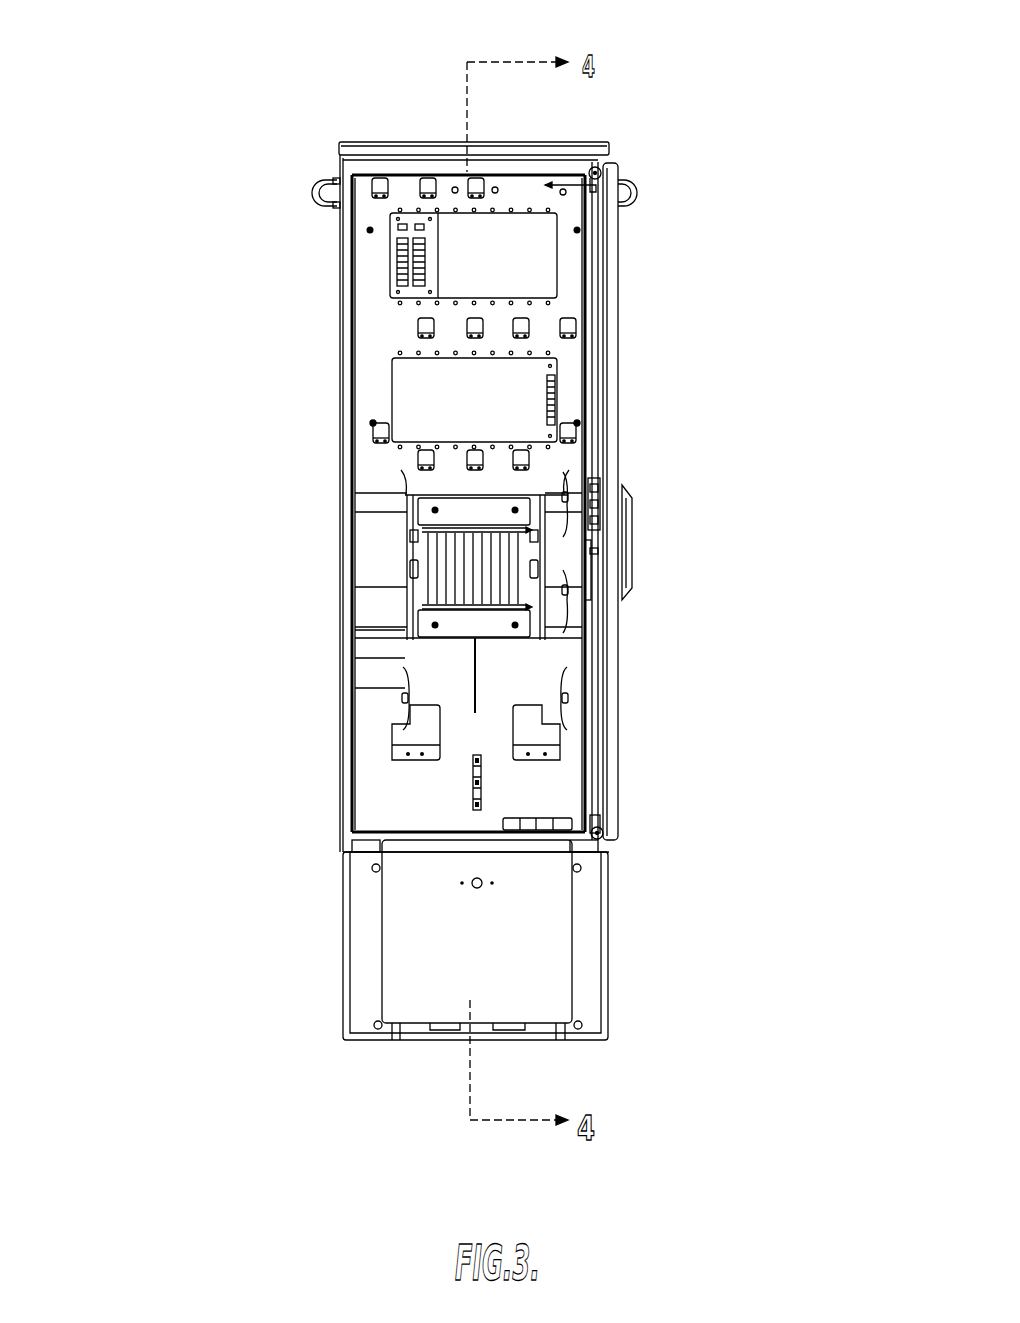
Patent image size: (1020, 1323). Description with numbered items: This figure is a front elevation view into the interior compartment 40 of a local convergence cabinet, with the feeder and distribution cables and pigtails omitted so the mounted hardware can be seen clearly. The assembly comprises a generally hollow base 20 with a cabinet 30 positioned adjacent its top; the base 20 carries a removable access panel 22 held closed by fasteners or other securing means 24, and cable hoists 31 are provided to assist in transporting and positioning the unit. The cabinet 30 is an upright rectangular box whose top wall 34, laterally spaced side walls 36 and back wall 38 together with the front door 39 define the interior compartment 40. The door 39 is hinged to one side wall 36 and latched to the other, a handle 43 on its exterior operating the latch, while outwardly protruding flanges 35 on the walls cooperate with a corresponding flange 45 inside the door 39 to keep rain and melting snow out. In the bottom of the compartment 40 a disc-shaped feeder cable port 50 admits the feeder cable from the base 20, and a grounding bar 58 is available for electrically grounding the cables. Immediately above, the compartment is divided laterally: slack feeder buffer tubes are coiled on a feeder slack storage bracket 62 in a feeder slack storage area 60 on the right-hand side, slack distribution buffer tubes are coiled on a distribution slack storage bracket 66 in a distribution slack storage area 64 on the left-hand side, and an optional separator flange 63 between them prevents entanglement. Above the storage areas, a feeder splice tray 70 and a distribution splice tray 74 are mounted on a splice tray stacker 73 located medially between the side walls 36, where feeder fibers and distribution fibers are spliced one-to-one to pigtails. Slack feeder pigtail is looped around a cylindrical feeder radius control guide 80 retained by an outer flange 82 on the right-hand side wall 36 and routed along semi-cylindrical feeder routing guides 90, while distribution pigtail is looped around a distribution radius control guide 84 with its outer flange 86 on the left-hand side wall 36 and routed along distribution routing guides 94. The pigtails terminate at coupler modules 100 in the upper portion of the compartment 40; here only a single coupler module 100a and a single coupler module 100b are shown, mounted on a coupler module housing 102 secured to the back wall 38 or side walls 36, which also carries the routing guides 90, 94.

The base 20 is at (330, 965).
The access panel 22 is at (548, 995).
The fasteners 24 is at (480, 885).
The cabinet 30 is at (318, 578).
The cable hoists 31 is at (312, 193).
The top wall 34 is at (375, 141).
The flange 35 is at (350, 775).
The side walls 36 is at (345, 295).
The back wall 38 is at (420, 799).
The front door 39 is at (616, 365).
The interior compartment 40 is at (506, 657).
The handle 43 is at (633, 512).
The flange 45 is at (610, 768).
The feeder cable port 50 is at (550, 820).
The grounding bar 58 is at (470, 797).
The feeder slack storage area 60 is at (540, 685).
The feeder slack storage bracket 62 is at (540, 730).
The separator flange 63 is at (470, 655).
The distribution slack storage area 64 is at (413, 660).
The distribution slack storage bracket 66 is at (400, 737).
The feeder splice tray 70 is at (523, 552).
The splice tray stacker 73 is at (460, 512).
The distribution splice tray 74 is at (432, 553).
The feeder radius control guide 80 is at (578, 497).
The outer flange 82 is at (567, 482).
The distribution radius control guide 84 is at (375, 497).
The outer flange 86 is at (400, 483).
The feeder routing guides 90 is at (569, 318).
The distribution routing guides 94 is at (428, 185).
The coupler modules 100 is at (530, 240).
The coupler module 100a is at (556, 400).
The coupler module 100b is at (398, 262).
The coupler module housing 102 is at (530, 190).